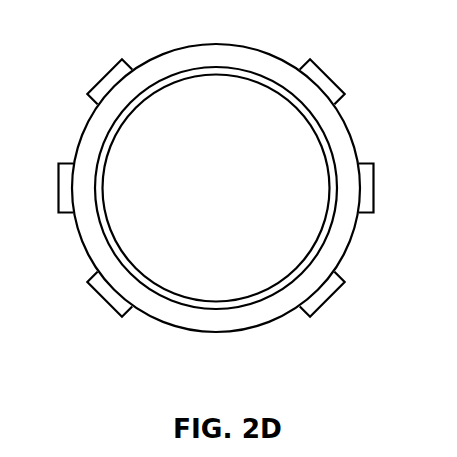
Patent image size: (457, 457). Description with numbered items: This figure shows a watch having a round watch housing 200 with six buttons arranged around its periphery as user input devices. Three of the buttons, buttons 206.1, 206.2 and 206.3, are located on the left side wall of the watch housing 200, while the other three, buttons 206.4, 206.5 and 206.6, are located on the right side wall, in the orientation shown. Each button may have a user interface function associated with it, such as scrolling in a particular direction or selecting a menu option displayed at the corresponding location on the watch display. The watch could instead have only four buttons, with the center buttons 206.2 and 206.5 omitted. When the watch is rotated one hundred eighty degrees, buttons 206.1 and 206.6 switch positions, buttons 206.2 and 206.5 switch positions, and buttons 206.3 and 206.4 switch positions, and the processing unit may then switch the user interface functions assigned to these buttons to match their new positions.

The watch housing 200 is at (235, 44).
The button 206.1 is at (98, 77).
The button 206.2 is at (60, 202).
The button 206.3 is at (102, 300).
The button 206.4 is at (325, 76).
The button 206.5 is at (373, 191).
The button 206.6 is at (333, 297).